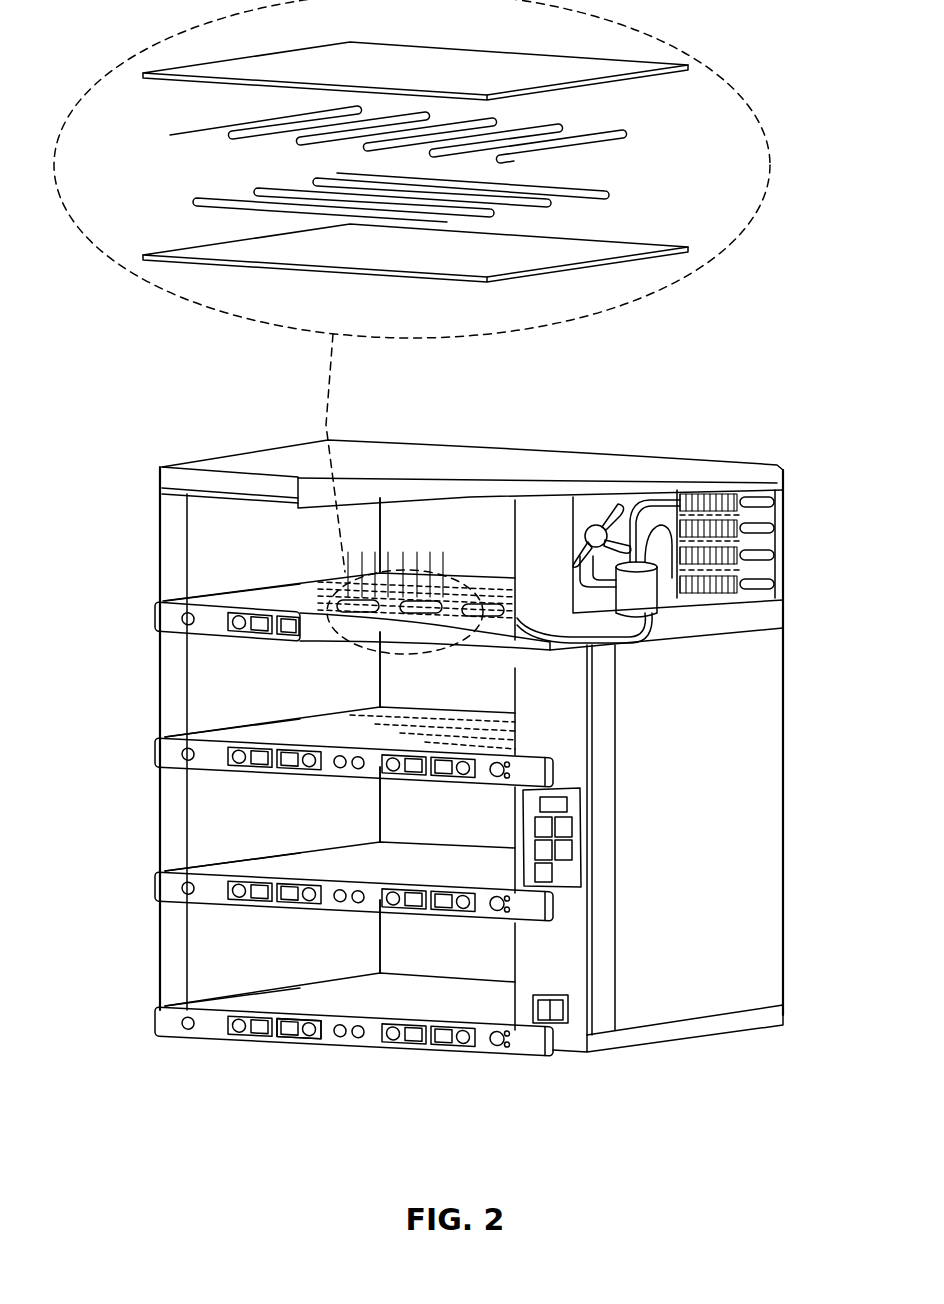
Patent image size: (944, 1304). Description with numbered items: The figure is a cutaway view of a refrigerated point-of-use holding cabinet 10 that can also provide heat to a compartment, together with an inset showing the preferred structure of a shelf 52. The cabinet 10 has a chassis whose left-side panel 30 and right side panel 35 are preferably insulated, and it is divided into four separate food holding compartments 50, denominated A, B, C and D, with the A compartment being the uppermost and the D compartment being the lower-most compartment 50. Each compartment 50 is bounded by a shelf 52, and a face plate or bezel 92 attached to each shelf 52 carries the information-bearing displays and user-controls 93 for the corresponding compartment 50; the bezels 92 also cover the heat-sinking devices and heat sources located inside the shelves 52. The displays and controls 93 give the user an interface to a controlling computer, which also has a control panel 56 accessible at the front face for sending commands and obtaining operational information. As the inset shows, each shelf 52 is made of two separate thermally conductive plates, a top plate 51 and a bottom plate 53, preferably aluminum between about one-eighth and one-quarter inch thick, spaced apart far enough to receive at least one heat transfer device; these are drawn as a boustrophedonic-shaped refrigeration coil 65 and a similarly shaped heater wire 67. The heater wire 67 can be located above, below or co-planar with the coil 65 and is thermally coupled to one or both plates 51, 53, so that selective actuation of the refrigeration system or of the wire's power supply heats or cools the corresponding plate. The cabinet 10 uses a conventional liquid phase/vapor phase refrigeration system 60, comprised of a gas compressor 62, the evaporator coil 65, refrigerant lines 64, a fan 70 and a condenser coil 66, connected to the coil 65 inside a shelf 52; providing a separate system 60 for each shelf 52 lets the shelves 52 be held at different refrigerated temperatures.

The point-of-use holding cabinet 10 is at (667, 322).
The left-side panel 30 is at (143, 515).
The right side panel 35 is at (740, 938).
The food holding compartment 50 is at (203, 557).
The top plate 51 is at (606, 67).
The shelf 52 is at (607, 248).
The bottom plate 53 is at (213, 268).
The control panel 56 is at (567, 875).
The refrigeration system 60 is at (795, 483).
The gas compressor 62 is at (645, 597).
The refrigerant lines 64 is at (627, 628).
The refrigeration coil 65 is at (608, 193).
The condenser coil 66 is at (753, 498).
The heater wire 67 is at (625, 129).
The fan 70 is at (573, 527).
The bezel 92 is at (210, 1025).
The displays and user-controls 93 is at (307, 1050).
The top compartment A is at (225, 578).
The second compartment B is at (222, 678).
The third compartment C is at (222, 832).
The bottom compartment D is at (222, 948).